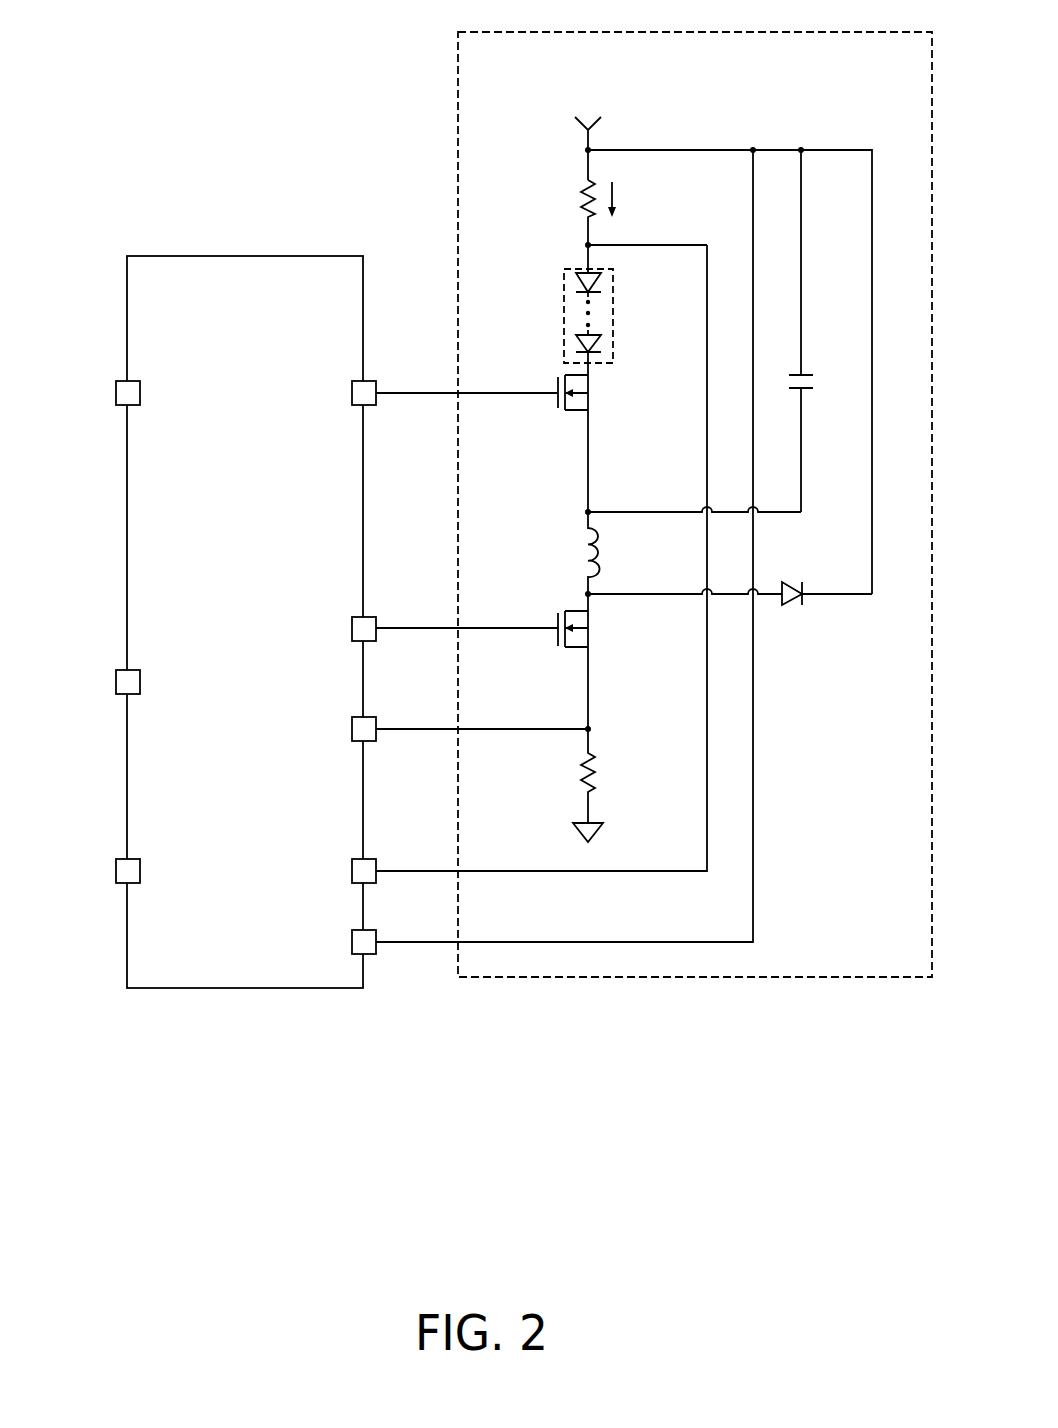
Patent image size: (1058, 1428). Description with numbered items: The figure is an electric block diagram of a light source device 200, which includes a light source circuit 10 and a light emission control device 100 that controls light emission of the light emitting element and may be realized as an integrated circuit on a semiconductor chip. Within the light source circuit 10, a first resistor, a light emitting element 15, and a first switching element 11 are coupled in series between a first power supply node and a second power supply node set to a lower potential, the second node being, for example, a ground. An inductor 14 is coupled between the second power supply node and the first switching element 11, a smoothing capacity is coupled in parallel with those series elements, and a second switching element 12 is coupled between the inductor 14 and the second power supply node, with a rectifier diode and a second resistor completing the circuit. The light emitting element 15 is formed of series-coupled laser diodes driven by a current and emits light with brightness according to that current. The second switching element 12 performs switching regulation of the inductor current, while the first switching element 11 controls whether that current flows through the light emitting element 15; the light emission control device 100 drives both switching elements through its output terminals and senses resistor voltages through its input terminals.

The light source device 200 is at (178, 113).
The light emission control device 100 is at (205, 256).
The light source circuit 10 is at (535, 32).
The first switching element 11 is at (577, 417).
The second switching element 12 is at (578, 650).
The inductor 14 is at (586, 547).
The light emitting element 15 is at (563, 316).